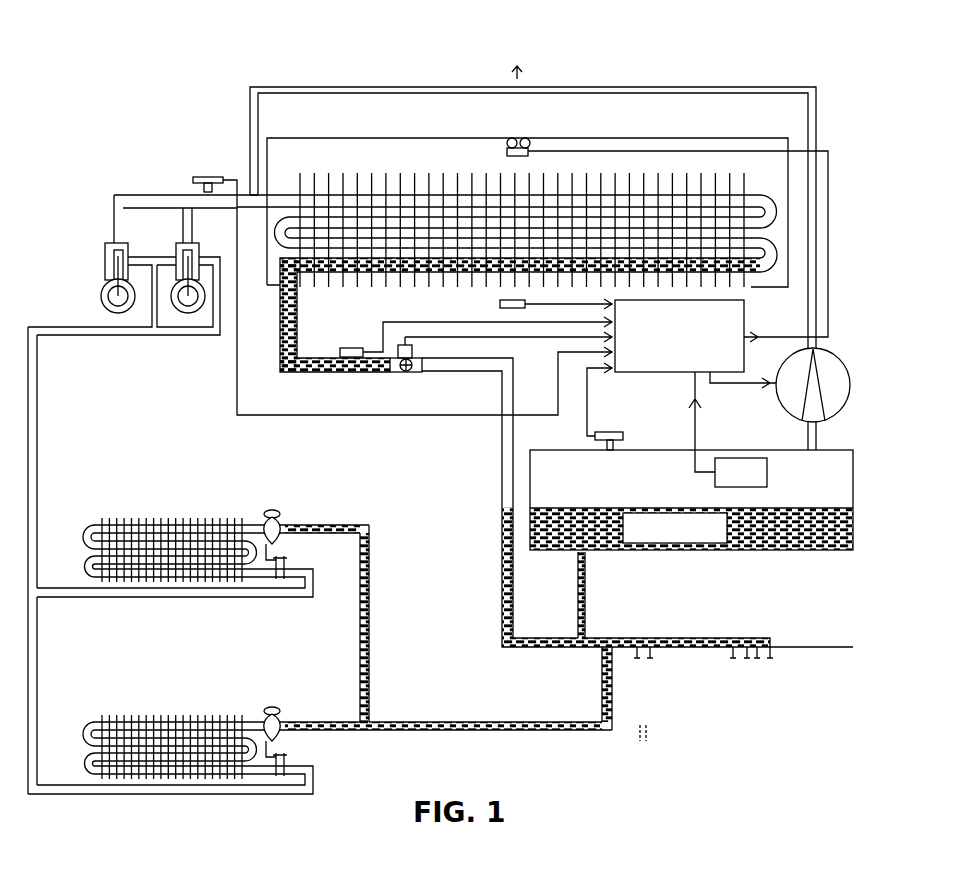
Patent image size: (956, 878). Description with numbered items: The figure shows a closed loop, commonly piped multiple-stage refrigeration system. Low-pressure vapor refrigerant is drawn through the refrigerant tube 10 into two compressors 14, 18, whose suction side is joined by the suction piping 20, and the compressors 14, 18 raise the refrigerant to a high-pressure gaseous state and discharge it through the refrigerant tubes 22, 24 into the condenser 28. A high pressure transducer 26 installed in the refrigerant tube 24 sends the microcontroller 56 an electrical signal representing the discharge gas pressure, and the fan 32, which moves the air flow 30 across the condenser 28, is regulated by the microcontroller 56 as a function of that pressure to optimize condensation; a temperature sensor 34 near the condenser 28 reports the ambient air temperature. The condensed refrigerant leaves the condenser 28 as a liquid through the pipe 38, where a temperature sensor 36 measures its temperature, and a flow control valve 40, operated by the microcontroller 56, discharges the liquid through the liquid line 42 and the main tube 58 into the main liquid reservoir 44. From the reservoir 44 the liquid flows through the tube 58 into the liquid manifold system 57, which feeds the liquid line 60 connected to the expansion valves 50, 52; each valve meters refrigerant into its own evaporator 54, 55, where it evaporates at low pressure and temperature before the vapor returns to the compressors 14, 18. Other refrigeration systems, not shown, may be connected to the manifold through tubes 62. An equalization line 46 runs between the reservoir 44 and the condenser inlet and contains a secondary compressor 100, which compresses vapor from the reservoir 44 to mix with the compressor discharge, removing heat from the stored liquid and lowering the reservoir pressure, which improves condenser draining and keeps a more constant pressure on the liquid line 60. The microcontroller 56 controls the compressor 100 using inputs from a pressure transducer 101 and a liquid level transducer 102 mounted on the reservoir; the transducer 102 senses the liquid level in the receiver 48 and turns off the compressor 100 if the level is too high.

The refrigerant tube 10 is at (37, 466).
The compressor 14 is at (105, 263).
The compressor 18 is at (165, 263).
The suction line 20 is at (210, 336).
The refrigerant tube 22 is at (152, 195).
The refrigerant tube 24 is at (247, 217).
The high pressure transducer 26 is at (234, 177).
The condenser 28 is at (283, 137).
The air flow 30 is at (522, 78).
The fan 32 is at (505, 152).
The temperature sensor 34 is at (498, 305).
The temperature sensor 36 is at (358, 348).
The pipe 38 is at (281, 362).
The flow control valve 40 is at (423, 376).
The liquid line 42 is at (502, 512).
The main liquid reservoir 44 is at (567, 450).
The equalization line 46 is at (782, 94).
The receiver 48 is at (750, 527).
The expansion valve 50 is at (283, 712).
The expansion valve 52 is at (283, 517).
The evaporator 54 is at (195, 722).
The evaporator 55 is at (143, 521).
The microcontroller 56 is at (679, 336).
The liquid manifold system 57 is at (772, 641).
The main tube 58 is at (577, 612).
The liquid line 60 is at (497, 722).
The tube 62 is at (656, 733).
The secondary compressor 100 is at (788, 414).
The pressure transducer 101 is at (630, 437).
The liquid level transducer 102 is at (728, 429).